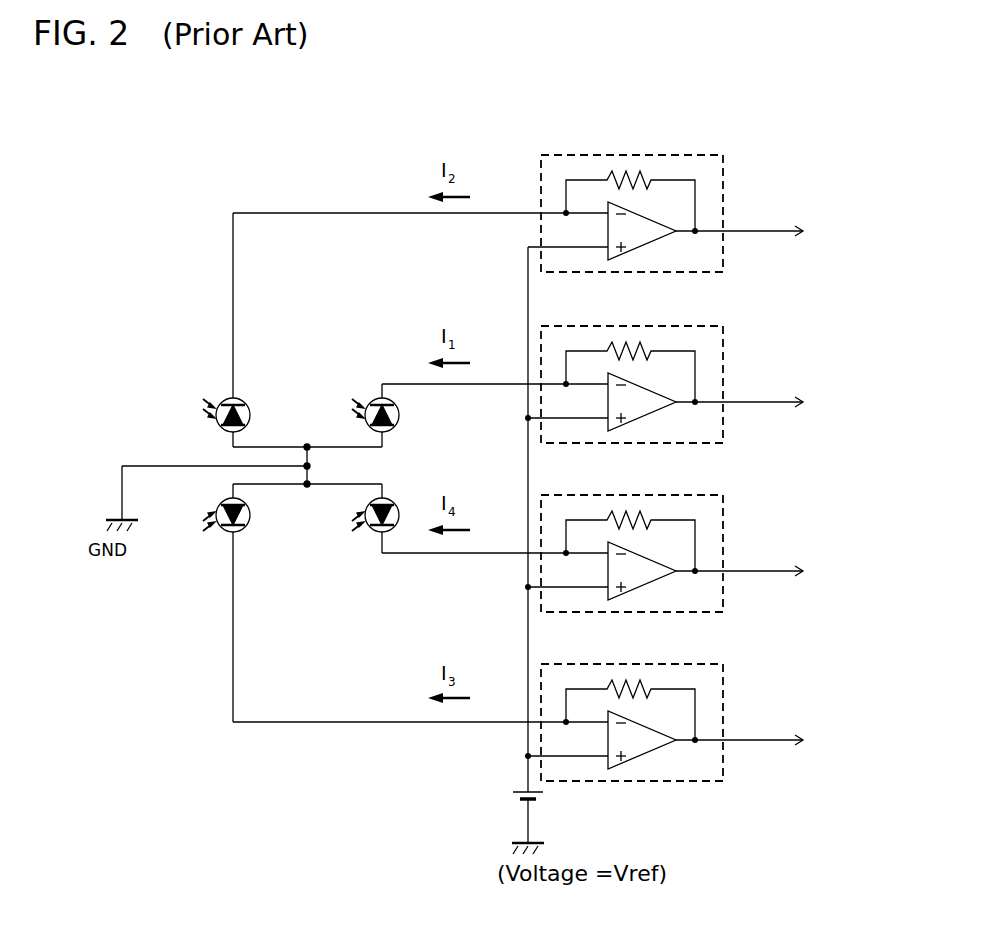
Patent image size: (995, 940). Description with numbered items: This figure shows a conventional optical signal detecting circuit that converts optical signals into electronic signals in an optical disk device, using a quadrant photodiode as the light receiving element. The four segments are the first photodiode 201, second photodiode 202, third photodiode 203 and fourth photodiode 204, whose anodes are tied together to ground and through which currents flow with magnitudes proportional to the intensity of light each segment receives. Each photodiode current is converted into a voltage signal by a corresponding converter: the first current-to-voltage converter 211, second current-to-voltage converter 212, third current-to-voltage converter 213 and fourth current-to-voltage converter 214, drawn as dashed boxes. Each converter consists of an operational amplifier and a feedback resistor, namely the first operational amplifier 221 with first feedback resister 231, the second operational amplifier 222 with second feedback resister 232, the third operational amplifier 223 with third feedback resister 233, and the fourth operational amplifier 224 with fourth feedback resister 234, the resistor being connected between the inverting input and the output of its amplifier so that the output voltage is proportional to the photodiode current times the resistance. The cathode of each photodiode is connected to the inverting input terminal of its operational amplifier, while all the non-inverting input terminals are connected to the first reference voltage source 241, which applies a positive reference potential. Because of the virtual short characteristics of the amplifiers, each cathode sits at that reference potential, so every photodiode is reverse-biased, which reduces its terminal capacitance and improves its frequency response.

The first photodiode 201 is at (395, 425).
The second photodiode 202 is at (243, 403).
The third photodiode 203 is at (245, 528).
The fourth photodiode 204 is at (395, 528).
The first current-to-voltage converter 211 is at (723, 429).
The second current-to-voltage converter 212 is at (723, 258).
The third current-to-voltage converter 213 is at (723, 767).
The fourth current-to-voltage converter 214 is at (723, 598).
The first operational amplifier 221 is at (628, 408).
The second operational amplifier 222 is at (628, 237).
The third operational amplifier 223 is at (628, 746).
The fourth operational amplifier 224 is at (628, 577).
The first feedback resister 231 is at (629, 343).
The second feedback resister 232 is at (629, 175).
The third feedback resister 233 is at (629, 680).
The fourth feedback resister 234 is at (629, 512).
The first reference voltage source 241 is at (536, 801).